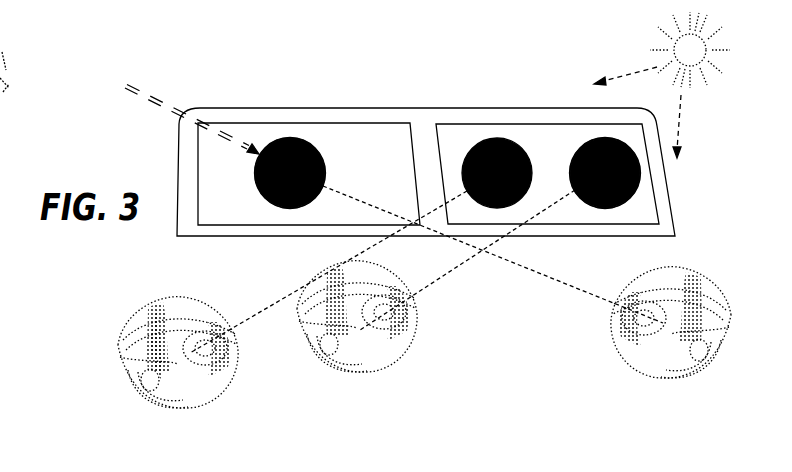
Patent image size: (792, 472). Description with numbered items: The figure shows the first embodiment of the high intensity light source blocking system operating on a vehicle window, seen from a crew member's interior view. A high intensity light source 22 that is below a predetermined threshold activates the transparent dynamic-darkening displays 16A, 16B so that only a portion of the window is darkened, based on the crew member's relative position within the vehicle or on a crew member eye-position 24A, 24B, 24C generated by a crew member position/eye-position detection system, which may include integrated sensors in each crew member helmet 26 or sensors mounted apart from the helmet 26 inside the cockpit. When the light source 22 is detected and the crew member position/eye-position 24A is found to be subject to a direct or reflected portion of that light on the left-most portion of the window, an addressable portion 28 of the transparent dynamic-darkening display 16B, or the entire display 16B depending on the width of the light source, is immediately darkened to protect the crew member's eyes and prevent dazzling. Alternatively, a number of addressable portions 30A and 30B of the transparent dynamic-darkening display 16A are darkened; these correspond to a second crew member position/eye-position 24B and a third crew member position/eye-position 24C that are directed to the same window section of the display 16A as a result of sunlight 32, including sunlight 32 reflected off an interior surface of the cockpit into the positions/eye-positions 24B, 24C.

The transparent dynamic-darkening display 16A is at (510, 130).
The transparent dynamic-darkening display 16B is at (302, 130).
The high intensity light source 22 is at (158, 108).
The crew member position/eye-position 24A is at (545, 276).
The second crew member position/eye-position 24B is at (235, 320).
The third crew member position/eye-position 24C is at (449, 270).
The crew member helmet 26 is at (177, 300).
The addressable portion 28 is at (323, 160).
The addressable portion 30A is at (493, 138).
The addressable portion 30B is at (592, 138).
The sunlight 32 is at (662, 85).